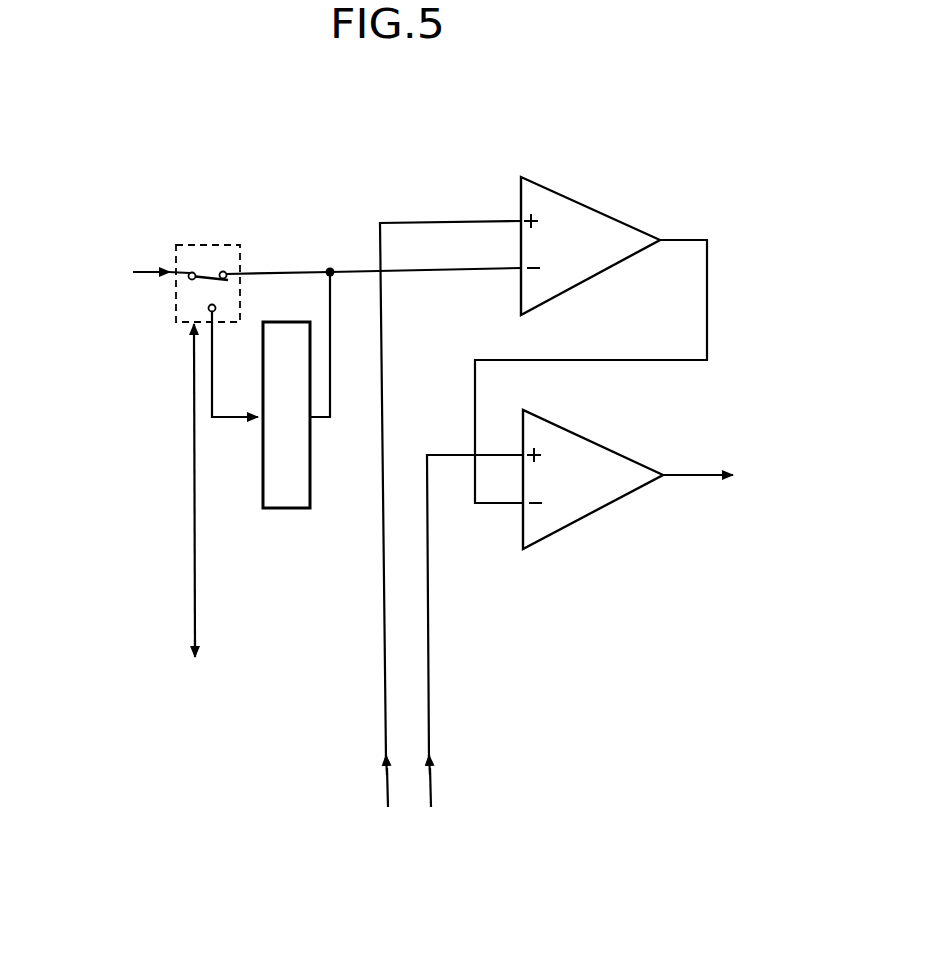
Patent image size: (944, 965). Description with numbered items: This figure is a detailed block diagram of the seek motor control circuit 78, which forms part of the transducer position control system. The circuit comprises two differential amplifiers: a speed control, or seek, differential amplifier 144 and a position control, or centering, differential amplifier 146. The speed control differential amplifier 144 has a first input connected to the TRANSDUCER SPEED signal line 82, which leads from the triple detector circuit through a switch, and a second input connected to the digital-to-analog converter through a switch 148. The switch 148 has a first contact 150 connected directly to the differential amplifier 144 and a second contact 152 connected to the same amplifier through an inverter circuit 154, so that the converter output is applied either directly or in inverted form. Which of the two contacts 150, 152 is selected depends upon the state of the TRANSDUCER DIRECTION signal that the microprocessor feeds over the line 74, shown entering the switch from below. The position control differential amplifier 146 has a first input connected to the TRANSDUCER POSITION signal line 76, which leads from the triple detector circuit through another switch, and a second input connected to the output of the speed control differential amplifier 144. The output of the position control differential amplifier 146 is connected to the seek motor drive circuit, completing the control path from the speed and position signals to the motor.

The seek motor control circuit 78 is at (641, 121).
The switch 148 is at (203, 244).
The first contact 150 is at (227, 273).
The second contact 152 is at (216, 306).
The inverter circuit 154 is at (283, 509).
The line 74 is at (196, 573).
The TRANSDUCER SPEED signal line 82 is at (383, 540).
The TRANSDUCER POSITION signal line 76 is at (429, 567).
The speed control differential amplifier 144 is at (557, 192).
The position control differential amplifier 146 is at (568, 432).